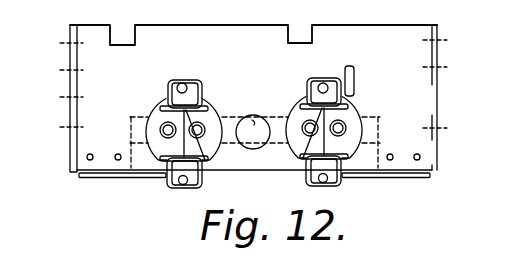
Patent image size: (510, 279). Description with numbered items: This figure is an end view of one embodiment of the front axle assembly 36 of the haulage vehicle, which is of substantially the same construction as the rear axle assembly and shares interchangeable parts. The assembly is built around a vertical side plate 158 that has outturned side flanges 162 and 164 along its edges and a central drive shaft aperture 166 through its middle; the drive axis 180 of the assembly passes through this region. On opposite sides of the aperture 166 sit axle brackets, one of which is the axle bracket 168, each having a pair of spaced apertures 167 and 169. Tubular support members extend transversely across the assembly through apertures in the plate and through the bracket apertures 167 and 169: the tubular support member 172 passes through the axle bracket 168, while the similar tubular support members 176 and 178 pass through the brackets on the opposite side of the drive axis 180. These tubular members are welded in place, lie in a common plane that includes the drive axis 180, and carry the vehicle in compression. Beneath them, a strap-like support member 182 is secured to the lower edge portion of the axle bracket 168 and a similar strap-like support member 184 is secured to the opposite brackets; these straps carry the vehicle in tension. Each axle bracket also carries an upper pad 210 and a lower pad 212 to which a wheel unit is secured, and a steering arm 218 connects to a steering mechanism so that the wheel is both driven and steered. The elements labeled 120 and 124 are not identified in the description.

The front axle assembly 36 is at (68, 173).
The latch member 120 is at (342, 77).
The rocker body 124 is at (201, 106).
The vertical side plate 158 is at (252, 61).
The outturned side flange 162 is at (70, 84).
The outturned side flange 164 is at (441, 72).
The central drive shaft aperture 166 is at (258, 119).
The aperture 167 is at (161, 122).
The axle bracket 168 is at (166, 100).
The aperture 169 is at (205, 123).
The tubular support member 172 is at (160, 138).
The tubular support member 176 is at (306, 124).
The tubular support member 178 is at (345, 118).
The drive axis 180 is at (252, 133).
The strap-like support member 182 is at (165, 176).
The strap-like support member 184 is at (347, 178).
The upper pad 210 is at (181, 83).
The lower pad 212 is at (180, 189).
The steering arm 218 is at (316, 75).